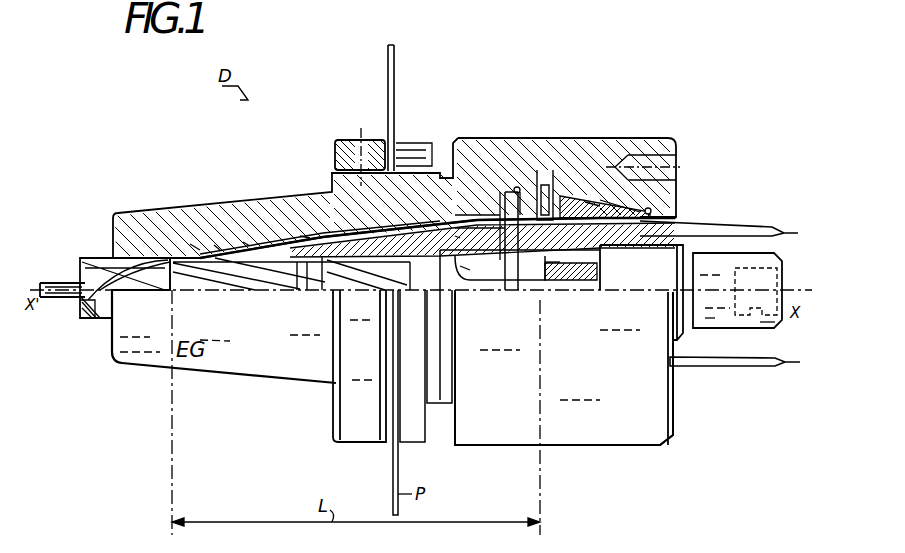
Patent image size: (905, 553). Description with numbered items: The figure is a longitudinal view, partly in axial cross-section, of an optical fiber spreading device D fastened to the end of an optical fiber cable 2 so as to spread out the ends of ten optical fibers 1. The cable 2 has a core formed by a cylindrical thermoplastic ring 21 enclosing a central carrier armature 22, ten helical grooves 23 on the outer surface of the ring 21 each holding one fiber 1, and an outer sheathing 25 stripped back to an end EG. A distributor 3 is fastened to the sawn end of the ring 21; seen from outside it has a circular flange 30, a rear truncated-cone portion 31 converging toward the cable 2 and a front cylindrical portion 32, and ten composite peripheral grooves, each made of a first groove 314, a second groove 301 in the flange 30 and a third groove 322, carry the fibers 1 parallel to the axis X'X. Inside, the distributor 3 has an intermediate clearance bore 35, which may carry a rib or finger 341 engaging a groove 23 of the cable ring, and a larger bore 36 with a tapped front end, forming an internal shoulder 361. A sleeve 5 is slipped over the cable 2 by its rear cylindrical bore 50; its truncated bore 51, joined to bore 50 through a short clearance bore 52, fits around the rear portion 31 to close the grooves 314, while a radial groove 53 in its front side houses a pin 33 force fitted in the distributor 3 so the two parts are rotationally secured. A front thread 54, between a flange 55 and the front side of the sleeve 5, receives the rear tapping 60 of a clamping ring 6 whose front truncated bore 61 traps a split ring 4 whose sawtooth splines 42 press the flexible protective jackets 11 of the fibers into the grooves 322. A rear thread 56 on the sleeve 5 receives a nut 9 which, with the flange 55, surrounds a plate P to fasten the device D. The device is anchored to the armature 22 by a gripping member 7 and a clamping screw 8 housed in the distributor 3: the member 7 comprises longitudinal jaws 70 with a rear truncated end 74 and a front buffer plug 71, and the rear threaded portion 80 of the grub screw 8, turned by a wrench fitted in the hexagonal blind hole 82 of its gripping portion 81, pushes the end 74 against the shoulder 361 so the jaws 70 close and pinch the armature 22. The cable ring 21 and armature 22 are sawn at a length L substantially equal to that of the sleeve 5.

The optical fibers 1 is at (216, 244).
The cable 2 is at (66, 386).
The distributor 3 is at (456, 152).
The split ring 4 is at (594, 200).
The sleeve 5 is at (260, 376).
The clamping ring 6 is at (614, 446).
The gripping member 7 is at (530, 296).
The clamping screw 8 is at (720, 282).
The nut 9 is at (354, 434).
The protective jackets 11 is at (726, 362).
The cable ring 21 is at (90, 302).
The central carrier armature 22 is at (48, 282).
The helical grooves 23 is at (224, 290).
The outer sheathing 25 is at (92, 256).
The circular flange 30 is at (550, 220).
The rear portion 31 is at (294, 288).
The front cylindrical portion 32 is at (670, 235).
The pin 33 is at (518, 256).
The intermediate clearance bore 35 is at (414, 288).
The third cylindrical bore 36 is at (598, 264).
The splines 42 is at (634, 220).
The cylindrical bore 50 is at (146, 214).
The truncated bore 51 is at (246, 240).
The intermediate cylindrical clearance bore 52 is at (190, 242).
The radial groove 53 is at (500, 178).
The front thread 54 is at (440, 406).
The flange 55 is at (408, 440).
The rear thread 56 is at (334, 170).
The rear tapping 60 is at (546, 196).
The front truncated bore 61 is at (652, 212).
The jaws 70 is at (506, 272).
The buffer plug 71 is at (550, 294).
The rear truncated end 74 is at (462, 268).
The rear threaded cylindrical portion 80 is at (648, 258).
The front cylindrical gripping portion 81 is at (714, 316).
The axial blind hole 82 is at (770, 322).
The second groove 301 is at (586, 202).
The first groove 314 is at (304, 236).
The third groove 322 is at (652, 198).
The rib or finger 341 is at (302, 266).
The internal circular shoulder 361 is at (456, 238).